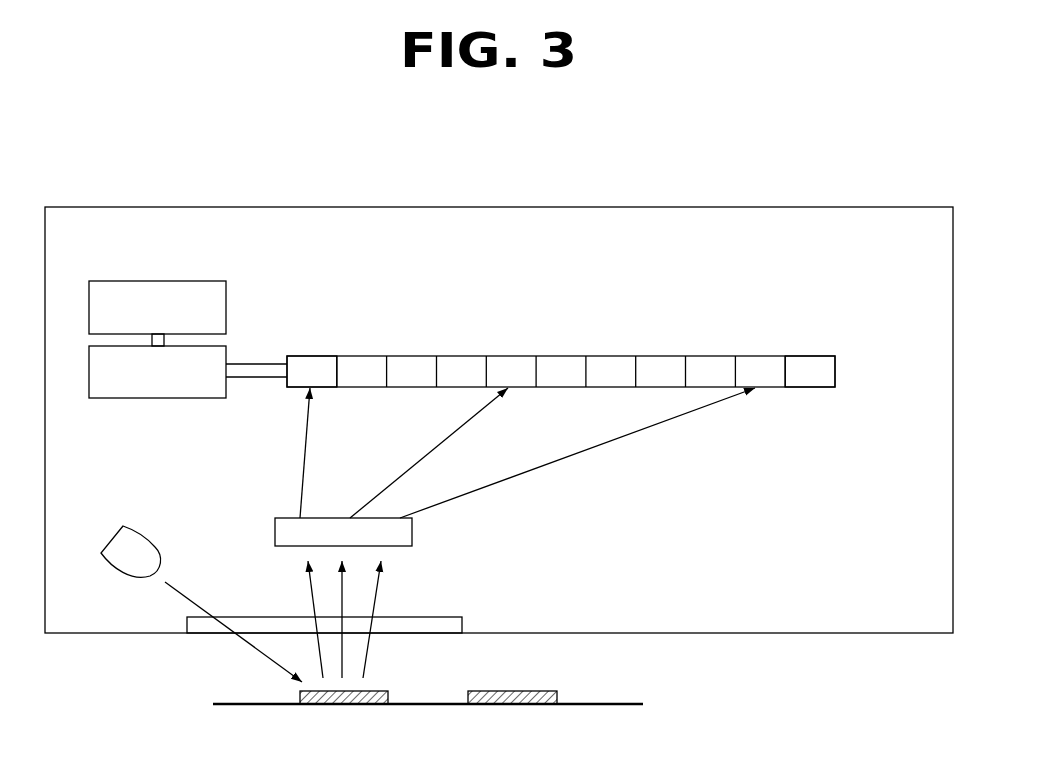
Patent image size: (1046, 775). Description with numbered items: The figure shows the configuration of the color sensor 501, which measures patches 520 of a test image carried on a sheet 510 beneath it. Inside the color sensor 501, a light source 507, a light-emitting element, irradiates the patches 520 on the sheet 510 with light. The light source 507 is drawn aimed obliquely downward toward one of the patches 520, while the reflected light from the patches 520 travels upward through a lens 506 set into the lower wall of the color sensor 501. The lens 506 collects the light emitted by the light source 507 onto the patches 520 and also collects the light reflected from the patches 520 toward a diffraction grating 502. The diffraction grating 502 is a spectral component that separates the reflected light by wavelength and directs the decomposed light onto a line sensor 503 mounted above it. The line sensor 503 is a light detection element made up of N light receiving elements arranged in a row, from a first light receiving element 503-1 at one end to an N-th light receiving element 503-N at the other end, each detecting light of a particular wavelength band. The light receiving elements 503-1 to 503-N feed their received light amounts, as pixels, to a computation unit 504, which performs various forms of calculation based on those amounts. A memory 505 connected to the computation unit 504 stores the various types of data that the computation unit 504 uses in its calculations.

The color sensor 501 is at (527, 205).
The diffraction grating 502 is at (413, 530).
The line sensor 503 is at (557, 343).
The light receiving element 503-1 is at (318, 355).
The light receiving element 503-N is at (810, 355).
The computation unit 504 is at (157, 400).
The memory 505 is at (157, 280).
The lens 506 is at (463, 628).
The light source 507 is at (143, 534).
The substrate 510 is at (590, 707).
The patches 520 is at (298, 697).